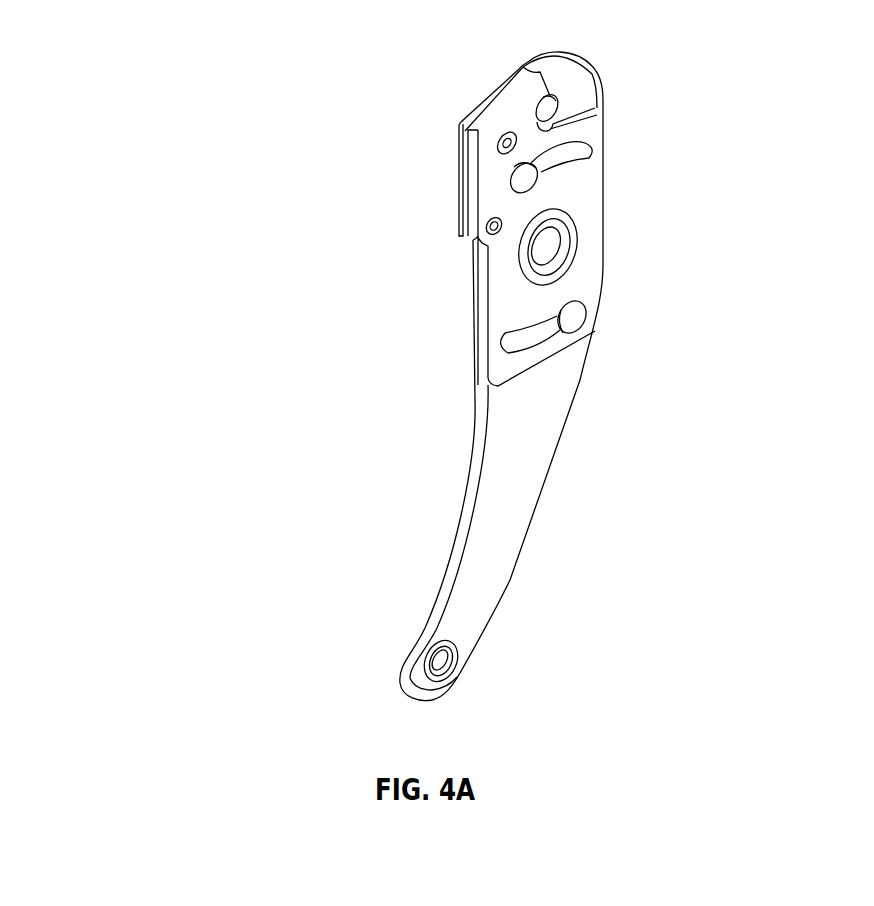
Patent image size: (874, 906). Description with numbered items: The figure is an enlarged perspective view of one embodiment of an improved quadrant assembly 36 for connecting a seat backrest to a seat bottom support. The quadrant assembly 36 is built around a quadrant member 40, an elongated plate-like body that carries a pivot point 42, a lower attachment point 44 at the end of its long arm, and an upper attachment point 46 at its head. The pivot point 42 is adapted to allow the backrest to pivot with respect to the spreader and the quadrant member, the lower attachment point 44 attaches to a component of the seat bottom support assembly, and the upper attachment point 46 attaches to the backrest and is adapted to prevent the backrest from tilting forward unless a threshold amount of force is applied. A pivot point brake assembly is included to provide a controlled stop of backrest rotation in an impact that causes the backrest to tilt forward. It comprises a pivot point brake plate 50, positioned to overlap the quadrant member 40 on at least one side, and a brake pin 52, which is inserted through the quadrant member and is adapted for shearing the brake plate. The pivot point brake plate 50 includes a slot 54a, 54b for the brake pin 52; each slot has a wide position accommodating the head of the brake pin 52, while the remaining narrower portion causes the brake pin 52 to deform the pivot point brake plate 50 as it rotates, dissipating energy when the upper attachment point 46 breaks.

The quadrant assembly 36 is at (472, 359).
The quadrant member 40 is at (568, 462).
The pivot point 42 is at (540, 243).
The lower attachment point 44 is at (430, 655).
The upper attachment point 46 is at (550, 108).
The pivot point brake plate 50 is at (488, 152).
The brake pin 52 is at (550, 189).
The slot 54a is at (577, 150).
The slot 54b is at (517, 345).